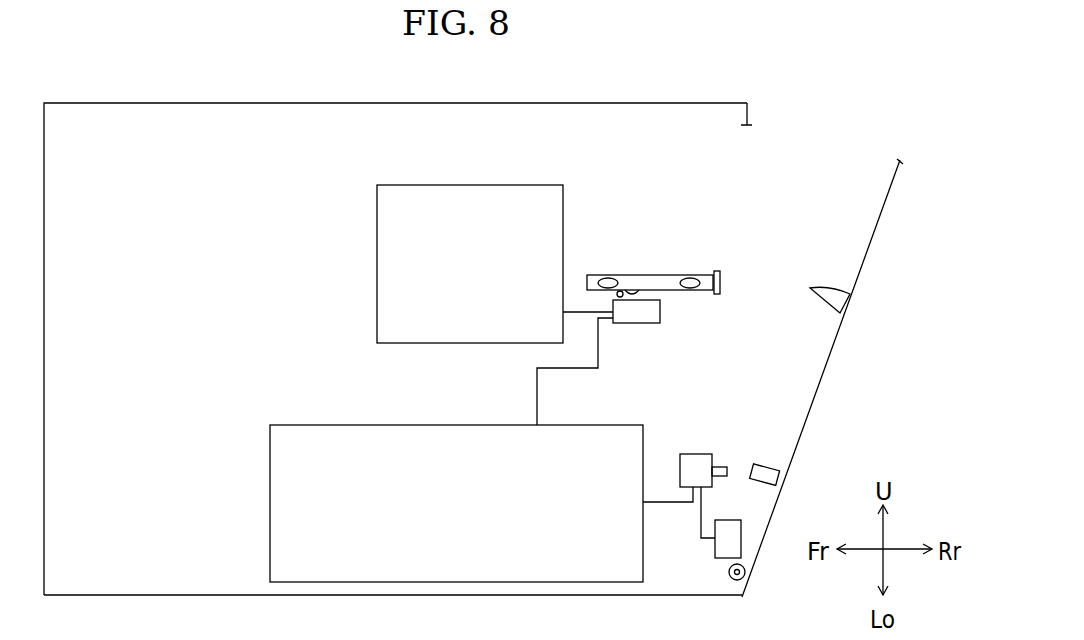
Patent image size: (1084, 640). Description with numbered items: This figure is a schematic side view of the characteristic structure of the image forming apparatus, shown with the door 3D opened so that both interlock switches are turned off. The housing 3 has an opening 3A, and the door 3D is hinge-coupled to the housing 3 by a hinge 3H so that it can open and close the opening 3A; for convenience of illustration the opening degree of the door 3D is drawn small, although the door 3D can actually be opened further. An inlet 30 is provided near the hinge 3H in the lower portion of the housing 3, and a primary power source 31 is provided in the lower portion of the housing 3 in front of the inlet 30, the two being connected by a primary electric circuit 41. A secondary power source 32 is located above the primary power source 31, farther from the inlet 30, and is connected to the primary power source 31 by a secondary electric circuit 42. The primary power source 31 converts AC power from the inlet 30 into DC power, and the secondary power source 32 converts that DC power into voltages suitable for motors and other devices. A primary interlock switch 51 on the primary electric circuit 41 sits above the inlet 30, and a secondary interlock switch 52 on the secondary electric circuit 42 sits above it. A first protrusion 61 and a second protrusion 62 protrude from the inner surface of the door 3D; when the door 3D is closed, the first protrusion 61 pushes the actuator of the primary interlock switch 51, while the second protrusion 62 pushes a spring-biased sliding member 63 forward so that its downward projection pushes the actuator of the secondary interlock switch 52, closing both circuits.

The housing 3 is at (425, 102).
The opening 3A is at (758, 124).
The door 3D is at (820, 382).
The hinge 3H is at (732, 583).
The inlet 30 is at (723, 560).
The primary power source 31 is at (270, 478).
The secondary power source 32 is at (377, 238).
The primary electric circuit 41 is at (683, 502).
The secondary electric circuit 42 is at (537, 395).
The primary interlock switch 51 is at (690, 454).
The secondary interlock switch 52 is at (633, 323).
The first protrusion 61 is at (765, 462).
The second protrusion 62 is at (829, 288).
The sliding member 63 is at (648, 275).